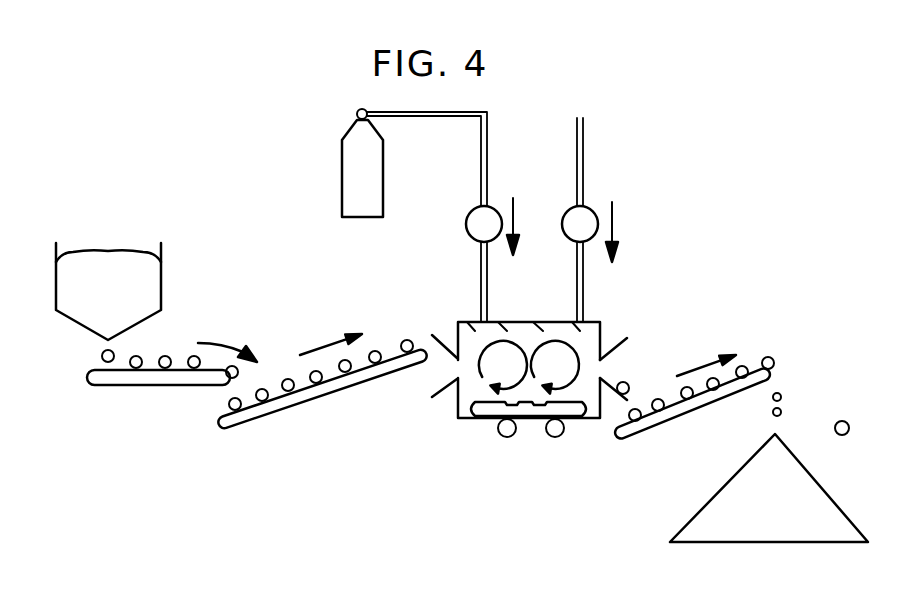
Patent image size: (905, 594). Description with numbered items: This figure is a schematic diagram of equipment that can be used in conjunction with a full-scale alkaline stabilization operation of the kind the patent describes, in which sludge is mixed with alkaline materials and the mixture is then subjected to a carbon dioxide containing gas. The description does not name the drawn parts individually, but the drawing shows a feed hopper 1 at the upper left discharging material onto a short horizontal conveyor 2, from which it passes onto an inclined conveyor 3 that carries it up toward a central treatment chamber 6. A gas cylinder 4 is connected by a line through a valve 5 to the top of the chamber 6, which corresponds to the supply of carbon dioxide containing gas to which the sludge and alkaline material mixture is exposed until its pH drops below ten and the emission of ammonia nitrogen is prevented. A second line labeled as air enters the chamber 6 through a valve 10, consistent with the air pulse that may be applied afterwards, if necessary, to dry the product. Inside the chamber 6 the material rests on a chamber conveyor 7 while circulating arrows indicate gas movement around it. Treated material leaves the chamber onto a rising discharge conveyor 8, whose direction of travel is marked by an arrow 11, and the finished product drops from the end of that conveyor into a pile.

The hopper 1 is at (91, 302).
The feed conveyor 2 is at (151, 364).
The inclined conveyor 3 is at (299, 385).
The gas cylinder 4 is at (396, 215).
The gas valve 5 is at (476, 226).
The treatment chamber 6 is at (518, 373).
The chamber conveyor 7 is at (528, 427).
The discharge conveyor 8 is at (740, 449).
The air valve 10 is at (607, 203).
The conveying direction 11 is at (708, 350).